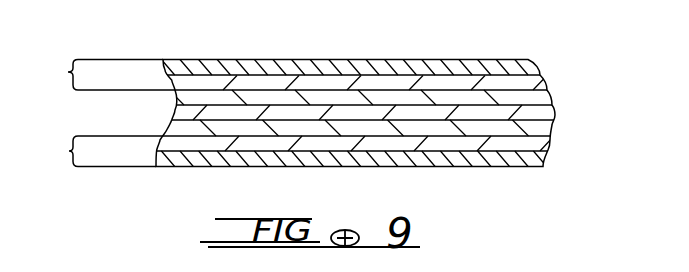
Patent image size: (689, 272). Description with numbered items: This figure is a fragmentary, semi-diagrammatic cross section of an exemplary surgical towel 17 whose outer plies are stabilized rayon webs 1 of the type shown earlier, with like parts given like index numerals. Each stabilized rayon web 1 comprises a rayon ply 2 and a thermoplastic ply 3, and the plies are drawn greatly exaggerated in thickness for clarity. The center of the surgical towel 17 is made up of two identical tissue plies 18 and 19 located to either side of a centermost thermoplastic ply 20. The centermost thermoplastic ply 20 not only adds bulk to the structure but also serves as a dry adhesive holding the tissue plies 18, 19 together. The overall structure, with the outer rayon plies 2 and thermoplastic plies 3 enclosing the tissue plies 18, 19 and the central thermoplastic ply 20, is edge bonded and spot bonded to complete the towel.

The stabilized rayon web 1 is at (111, 113).
The rayon ply 2 is at (532, 63).
The thermoplastic ply 3 is at (542, 80).
The surgical towel 17 is at (439, 52).
The tissue ply 18 is at (550, 98).
The tissue ply 19 is at (553, 128).
The thermoplastic ply 20 is at (557, 113).